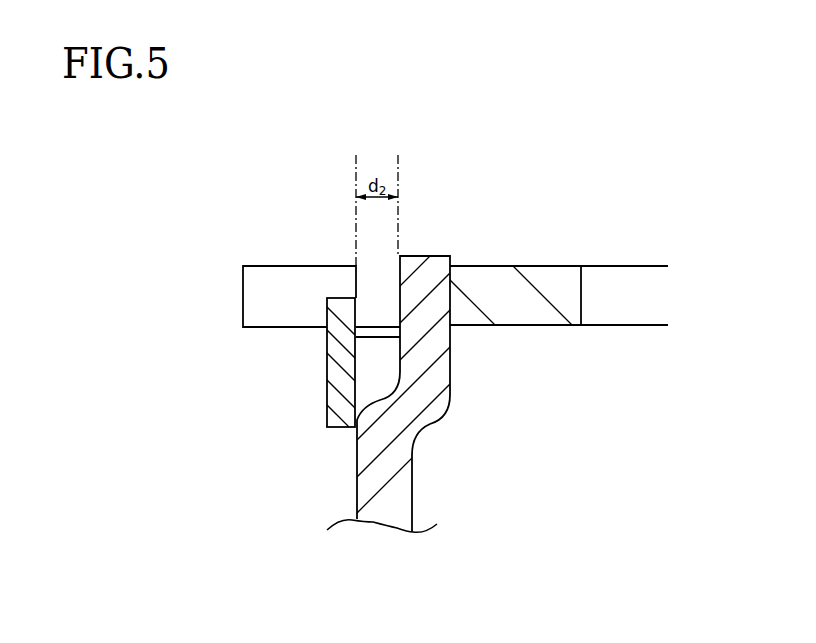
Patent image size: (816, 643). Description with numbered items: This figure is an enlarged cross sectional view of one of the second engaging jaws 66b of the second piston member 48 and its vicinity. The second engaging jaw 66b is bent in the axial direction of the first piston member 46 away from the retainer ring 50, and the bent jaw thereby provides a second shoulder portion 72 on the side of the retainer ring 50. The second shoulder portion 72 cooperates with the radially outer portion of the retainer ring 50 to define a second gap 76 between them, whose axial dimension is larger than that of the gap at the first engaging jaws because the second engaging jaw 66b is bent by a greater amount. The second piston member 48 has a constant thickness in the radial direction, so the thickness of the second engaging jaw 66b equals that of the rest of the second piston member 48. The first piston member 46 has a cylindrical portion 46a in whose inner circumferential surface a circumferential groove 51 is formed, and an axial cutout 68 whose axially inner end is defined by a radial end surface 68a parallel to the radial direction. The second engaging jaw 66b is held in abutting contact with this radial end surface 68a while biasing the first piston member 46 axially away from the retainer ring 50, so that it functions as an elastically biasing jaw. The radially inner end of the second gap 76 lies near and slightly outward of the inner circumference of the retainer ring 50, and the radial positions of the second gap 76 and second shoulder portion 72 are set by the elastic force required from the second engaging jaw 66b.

The first piston member 46 is at (539, 168).
The cylindrical portion 46a is at (547, 287).
The second piston member 48 is at (320, 477).
The retainer ring 50 is at (343, 398).
The circumferential groove 51 is at (336, 316).
The second engaging jaw 66b is at (420, 285).
The axial cutout 68 is at (297, 287).
The radial end surface 68a is at (450, 302).
The second shoulder portion 72 is at (374, 388).
The second gap 76 is at (378, 367).